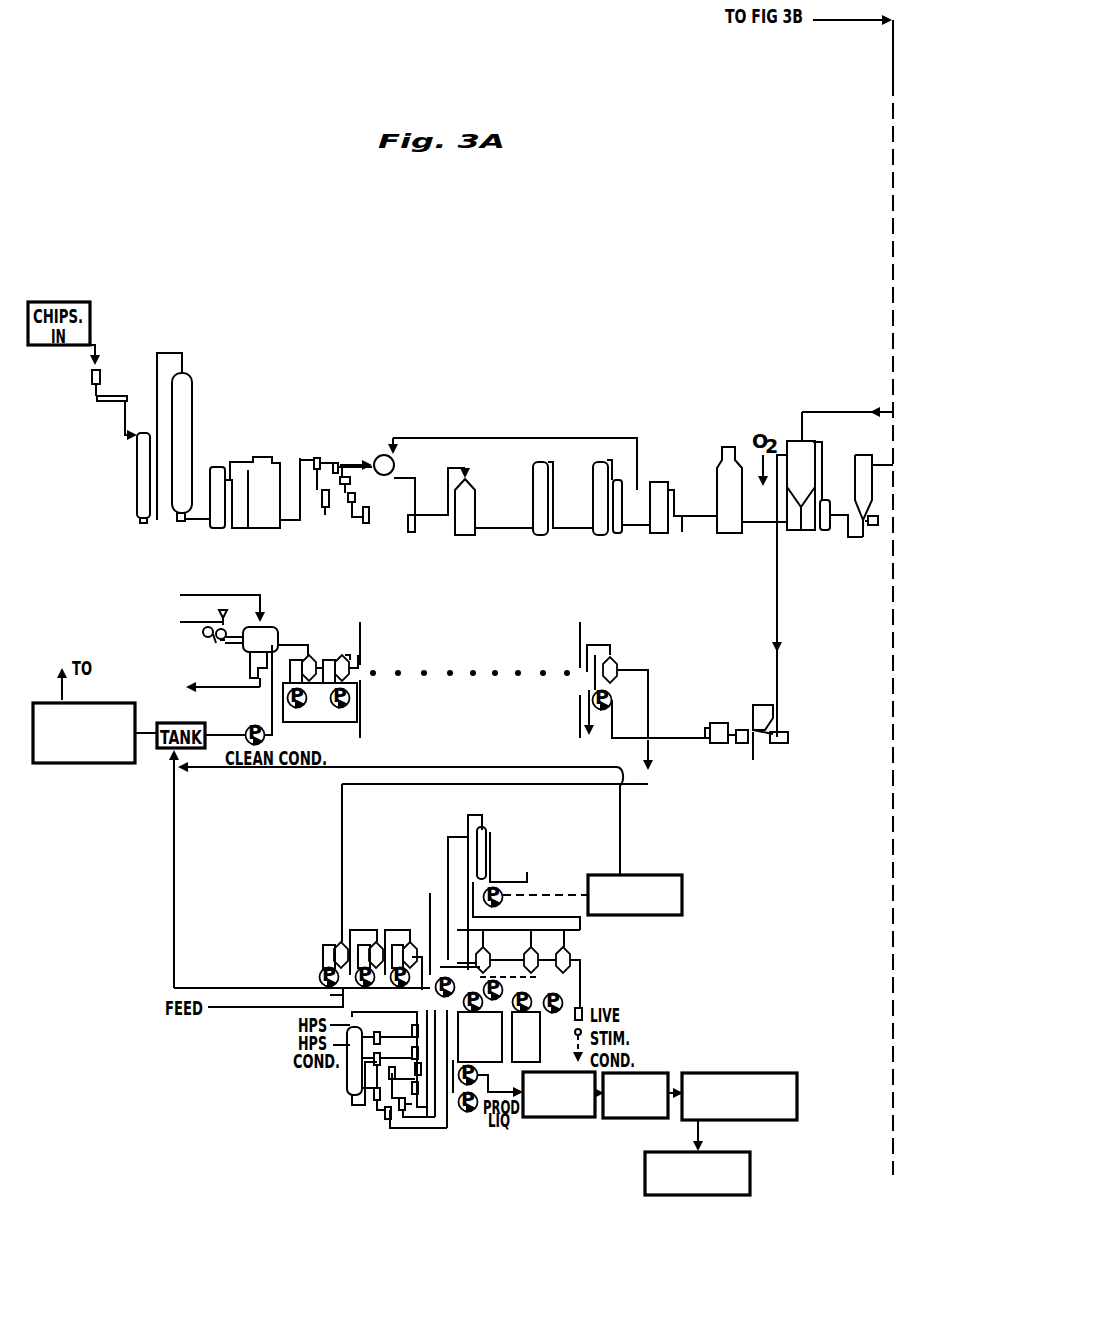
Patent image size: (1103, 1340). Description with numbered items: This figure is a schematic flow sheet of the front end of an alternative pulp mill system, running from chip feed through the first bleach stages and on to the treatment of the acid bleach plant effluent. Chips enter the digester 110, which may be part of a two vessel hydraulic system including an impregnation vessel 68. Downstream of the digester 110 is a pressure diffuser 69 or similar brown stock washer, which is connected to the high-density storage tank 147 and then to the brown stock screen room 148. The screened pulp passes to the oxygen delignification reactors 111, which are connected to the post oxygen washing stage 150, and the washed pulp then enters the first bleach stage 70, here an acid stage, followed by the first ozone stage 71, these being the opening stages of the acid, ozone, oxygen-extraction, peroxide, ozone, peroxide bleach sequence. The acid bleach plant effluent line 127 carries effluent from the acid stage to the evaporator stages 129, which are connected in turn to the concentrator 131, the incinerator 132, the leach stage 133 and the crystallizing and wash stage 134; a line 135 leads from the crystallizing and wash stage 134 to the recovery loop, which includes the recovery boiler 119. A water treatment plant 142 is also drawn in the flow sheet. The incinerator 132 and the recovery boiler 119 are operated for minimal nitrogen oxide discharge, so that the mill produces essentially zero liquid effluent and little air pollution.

The impregnation vessel 68 is at (135, 503).
The pressure diffuser 69 is at (222, 528).
The digester 110 is at (190, 420).
The high-density storage tank 147 is at (268, 465).
The brown stock screen room 148 is at (371, 435).
The oxygen delignification reactors 111 is at (598, 462).
The post oxygen washing stage 150 is at (668, 482).
The first bleach stage 70 is at (803, 460).
The first ozone stage 71 is at (862, 464).
The acid bleach plant effluent line 127 is at (779, 620).
The evaporator stages 129 is at (610, 616).
The water treatment plant 142 is at (112, 706).
The concentrator 131 is at (564, 868).
The incinerator 132 is at (548, 1118).
The leach stage 133 is at (643, 1073).
The crystallizing and wash stage 134 is at (692, 1073).
The line to recovery loop 135 is at (702, 1135).
The recovery boiler 119 is at (740, 1192).